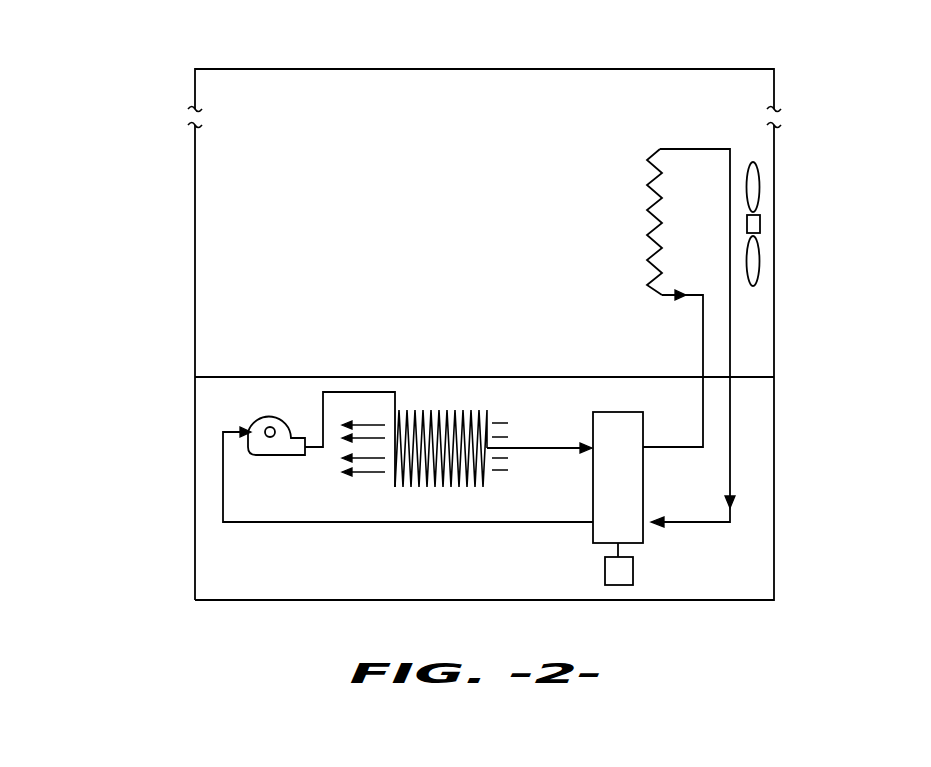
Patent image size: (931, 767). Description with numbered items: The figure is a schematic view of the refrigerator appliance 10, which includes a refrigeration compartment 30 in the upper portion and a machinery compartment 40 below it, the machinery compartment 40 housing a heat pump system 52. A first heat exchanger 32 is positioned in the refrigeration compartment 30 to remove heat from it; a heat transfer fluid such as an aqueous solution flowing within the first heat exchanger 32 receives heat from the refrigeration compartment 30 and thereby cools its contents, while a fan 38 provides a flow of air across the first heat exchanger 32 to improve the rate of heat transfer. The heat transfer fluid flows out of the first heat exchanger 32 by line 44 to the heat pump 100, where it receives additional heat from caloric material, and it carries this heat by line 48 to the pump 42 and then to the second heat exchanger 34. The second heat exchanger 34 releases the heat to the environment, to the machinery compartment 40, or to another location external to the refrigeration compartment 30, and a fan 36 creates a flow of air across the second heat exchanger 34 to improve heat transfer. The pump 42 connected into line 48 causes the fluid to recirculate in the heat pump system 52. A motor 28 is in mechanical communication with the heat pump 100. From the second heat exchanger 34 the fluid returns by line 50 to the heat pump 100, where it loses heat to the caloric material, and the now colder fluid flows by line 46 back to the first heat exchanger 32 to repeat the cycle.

The refrigerator appliance 10 is at (128, 168).
The refrigeration compartment 30 is at (481, 103).
The first heat exchanger 32 is at (657, 192).
The fan 38 is at (758, 192).
The line 44 is at (732, 333).
The line 46 is at (702, 347).
The machinery compartment 40 is at (222, 407).
The pump 42 is at (257, 410).
The line 48 is at (327, 390).
The second heat exchanger 34 is at (458, 410).
The fan 36 is at (372, 423).
The heat pump system 52 is at (412, 362).
The line 50 is at (533, 447).
The heat pump 100 is at (618, 412).
The motor 28 is at (605, 570).